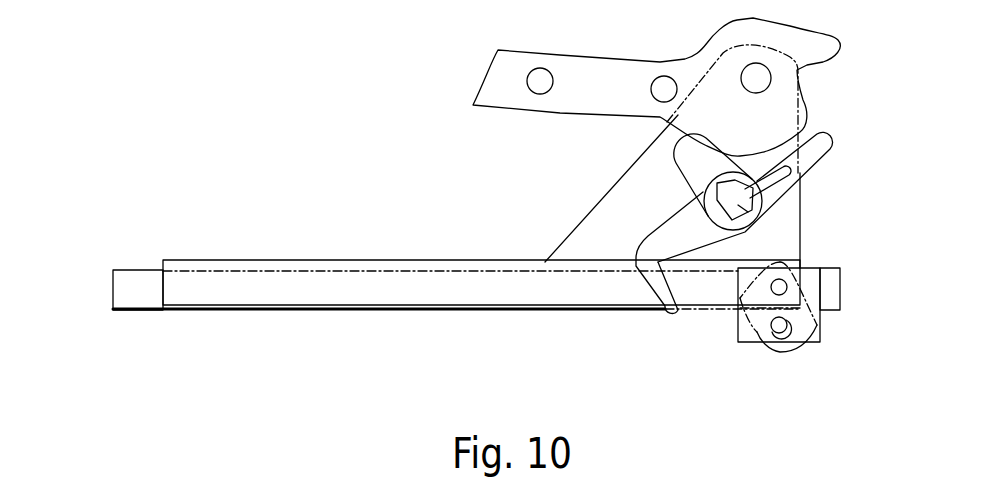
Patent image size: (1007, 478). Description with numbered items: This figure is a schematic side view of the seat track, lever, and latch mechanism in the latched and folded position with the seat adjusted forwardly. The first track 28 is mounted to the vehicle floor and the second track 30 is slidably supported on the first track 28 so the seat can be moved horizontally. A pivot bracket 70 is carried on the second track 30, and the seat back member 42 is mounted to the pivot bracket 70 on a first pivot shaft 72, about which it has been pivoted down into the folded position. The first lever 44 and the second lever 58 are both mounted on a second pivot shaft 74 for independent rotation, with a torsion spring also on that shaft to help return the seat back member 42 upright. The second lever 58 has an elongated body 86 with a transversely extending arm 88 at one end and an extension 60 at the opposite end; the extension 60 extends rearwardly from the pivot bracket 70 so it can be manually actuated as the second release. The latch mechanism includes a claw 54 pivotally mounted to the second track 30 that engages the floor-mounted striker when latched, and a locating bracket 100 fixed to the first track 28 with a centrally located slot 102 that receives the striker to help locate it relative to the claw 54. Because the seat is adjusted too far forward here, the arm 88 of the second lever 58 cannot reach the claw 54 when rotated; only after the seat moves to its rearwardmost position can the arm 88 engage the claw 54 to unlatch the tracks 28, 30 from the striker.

The first track 28 is at (133, 302).
The second track 30 is at (133, 268).
The seat back member 42 is at (618, 72).
The first lever 44 is at (673, 158).
The claw 54 is at (795, 348).
The second lever 58 is at (785, 185).
The extension 60 is at (826, 143).
The pivot bracket 70 is at (655, 198).
The first pivot shaft 72 is at (761, 80).
The second pivot shaft 74 is at (762, 222).
The elongated body 86 is at (652, 226).
The arm 88 is at (647, 285).
The locating bracket 100 is at (740, 325).
The slot 102 is at (780, 335).